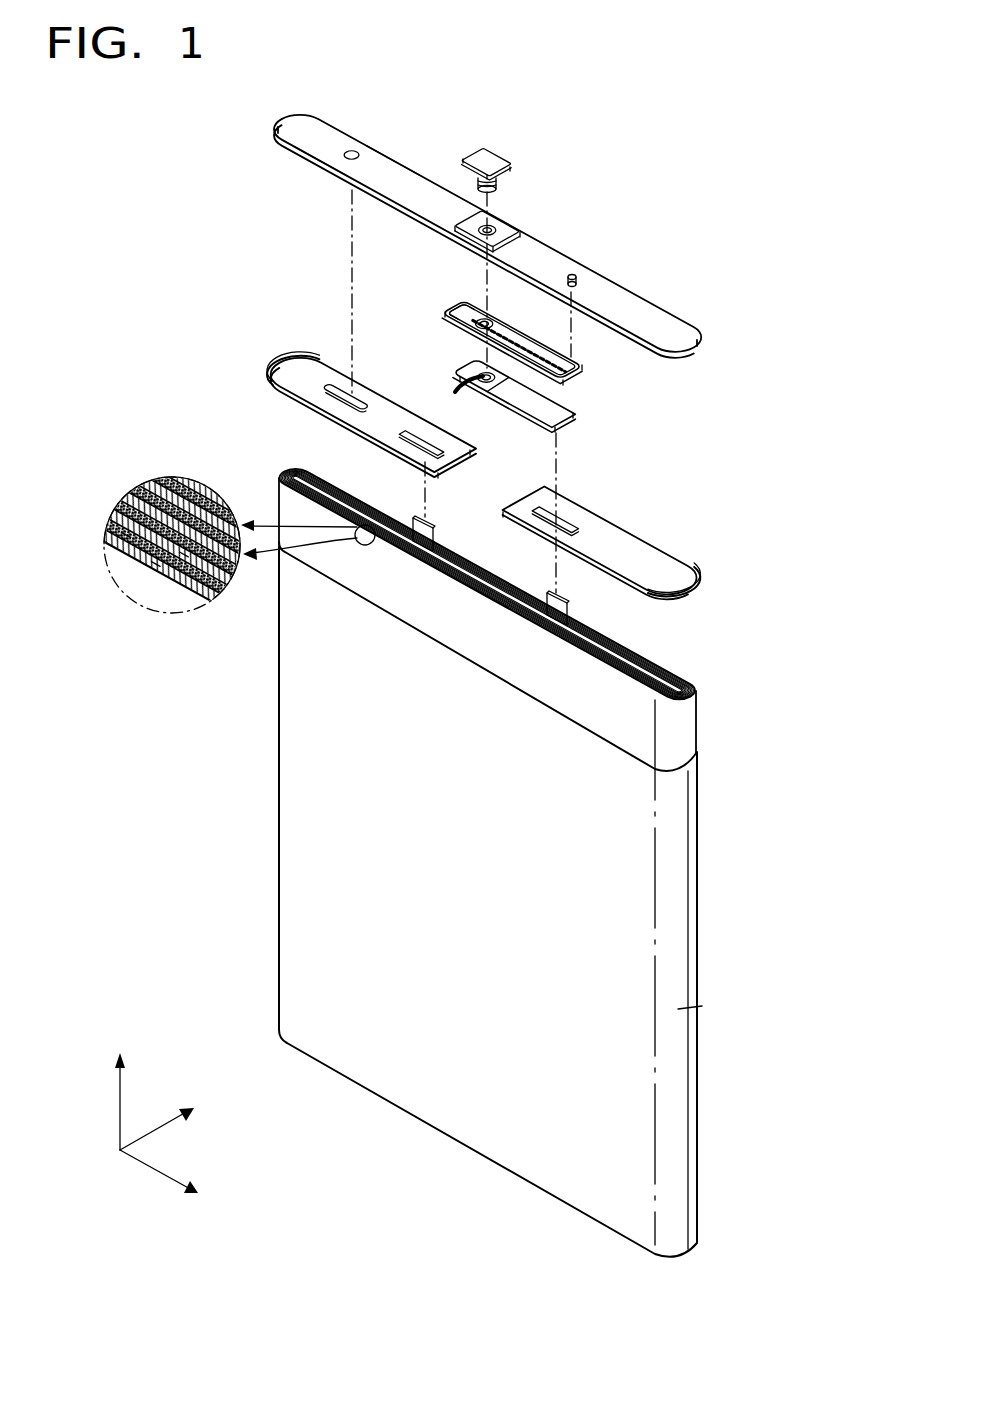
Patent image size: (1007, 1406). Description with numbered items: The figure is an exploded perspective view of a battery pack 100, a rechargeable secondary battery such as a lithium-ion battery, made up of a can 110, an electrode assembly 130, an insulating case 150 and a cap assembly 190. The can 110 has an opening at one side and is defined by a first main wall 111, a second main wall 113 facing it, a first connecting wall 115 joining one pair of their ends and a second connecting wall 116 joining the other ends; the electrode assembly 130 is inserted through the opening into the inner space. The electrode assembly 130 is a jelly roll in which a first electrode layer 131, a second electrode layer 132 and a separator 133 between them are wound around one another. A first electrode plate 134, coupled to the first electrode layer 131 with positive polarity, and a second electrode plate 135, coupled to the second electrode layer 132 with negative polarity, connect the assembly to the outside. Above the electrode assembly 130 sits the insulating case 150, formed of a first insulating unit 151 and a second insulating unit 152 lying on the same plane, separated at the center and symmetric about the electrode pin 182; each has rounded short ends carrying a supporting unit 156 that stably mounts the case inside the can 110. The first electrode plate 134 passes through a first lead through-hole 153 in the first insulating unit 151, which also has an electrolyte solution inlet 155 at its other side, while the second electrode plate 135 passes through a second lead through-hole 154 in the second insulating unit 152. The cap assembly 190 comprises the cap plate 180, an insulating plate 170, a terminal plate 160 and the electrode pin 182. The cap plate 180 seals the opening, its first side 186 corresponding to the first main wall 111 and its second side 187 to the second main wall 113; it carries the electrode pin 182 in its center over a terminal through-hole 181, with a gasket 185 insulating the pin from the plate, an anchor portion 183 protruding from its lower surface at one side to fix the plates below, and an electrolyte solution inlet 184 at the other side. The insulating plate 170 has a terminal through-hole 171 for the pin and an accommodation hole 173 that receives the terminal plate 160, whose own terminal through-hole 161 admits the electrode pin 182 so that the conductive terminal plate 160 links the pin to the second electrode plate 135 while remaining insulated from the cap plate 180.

The battery pack 100 is at (717, 161).
The can 110 is at (266, 797).
The first main wall 111 is at (345, 895).
The second main wall 113 is at (700, 868).
The first connecting wall 115 is at (683, 1008).
The second connecting wall 116 is at (280, 703).
The electrode assembly 130 is at (690, 722).
The first electrode layer 131 is at (160, 572).
The second electrode layer 132 is at (125, 540).
The separator 133 is at (180, 582).
The first electrode plate 134 is at (430, 528).
The second electrode plate 135 is at (567, 606).
The insulating case 150 is at (704, 564).
The first insulating unit 151 is at (317, 374).
The second insulating unit 152 is at (677, 584).
The first lead through-hole 153 is at (420, 445).
The second lead through-hole 154 is at (565, 522).
The electrolyte solution inlet 155 is at (325, 397).
The supporting unit 156 is at (283, 378).
The terminal plate 160 is at (575, 420).
The terminal through-hole 161 is at (456, 392).
The insulating plate 170 is at (583, 367).
The terminal through-hole 171 is at (471, 317).
The accommodation hole 173 is at (447, 313).
The cap plate 180 is at (650, 323).
The terminal through-hole 181 is at (497, 228).
The electrode pin 182 is at (492, 158).
The anchor portion 183 is at (577, 277).
The electrolyte solution inlet 184 is at (352, 148).
The gasket 185 is at (470, 214).
The first side 186 is at (320, 160).
The second side 187 is at (393, 157).
The cap assembly 190 is at (762, 321).